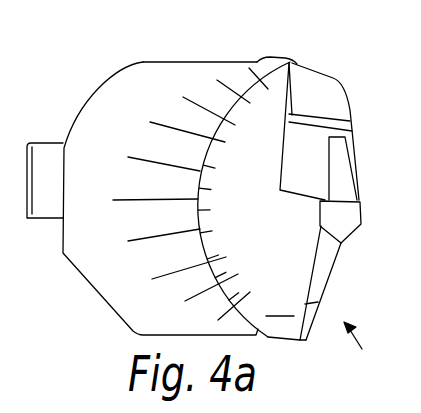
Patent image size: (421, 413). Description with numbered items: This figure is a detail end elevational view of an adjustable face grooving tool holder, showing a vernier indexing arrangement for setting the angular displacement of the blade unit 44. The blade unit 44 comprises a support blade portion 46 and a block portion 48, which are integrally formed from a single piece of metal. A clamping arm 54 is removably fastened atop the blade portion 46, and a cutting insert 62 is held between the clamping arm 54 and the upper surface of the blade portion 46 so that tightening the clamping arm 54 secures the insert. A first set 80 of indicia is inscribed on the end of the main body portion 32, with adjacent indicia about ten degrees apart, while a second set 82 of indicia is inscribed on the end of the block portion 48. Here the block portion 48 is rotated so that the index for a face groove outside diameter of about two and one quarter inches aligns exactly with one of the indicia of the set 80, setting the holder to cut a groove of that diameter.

The main body portion 32 is at (148, 84).
The first set of indicia 80 is at (210, 106).
The second set of indicia 82 is at (291, 62).
The clamping arm 54 is at (320, 138).
The cutting insert 62 is at (356, 214).
The support blade portion 46 is at (338, 277).
The blade unit 44 is at (365, 351).
The block portion 48 is at (280, 306).